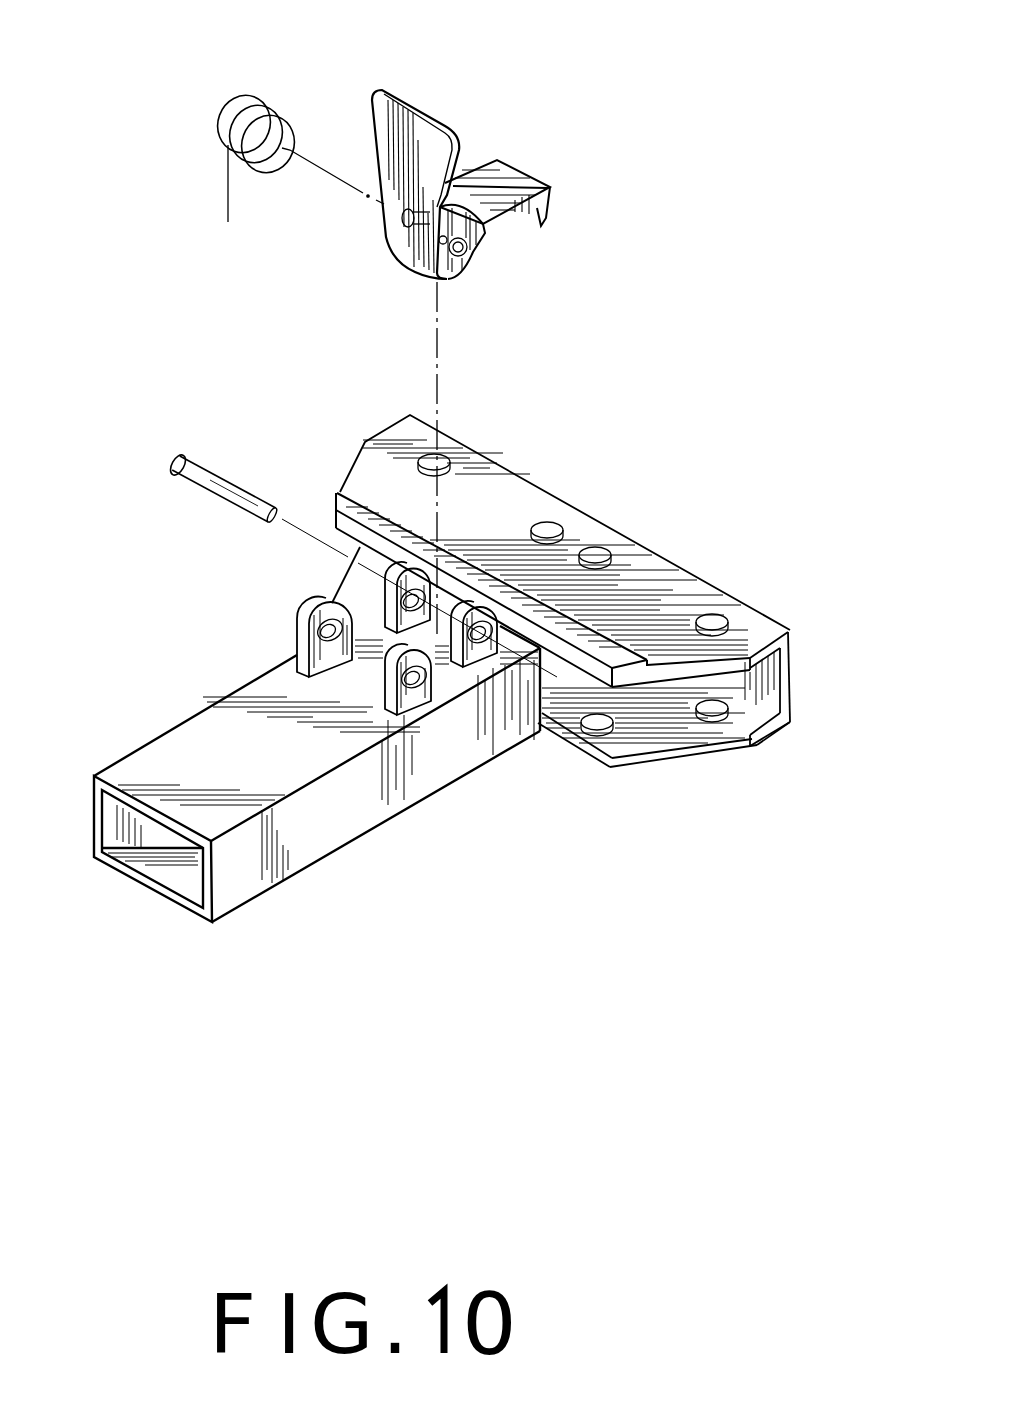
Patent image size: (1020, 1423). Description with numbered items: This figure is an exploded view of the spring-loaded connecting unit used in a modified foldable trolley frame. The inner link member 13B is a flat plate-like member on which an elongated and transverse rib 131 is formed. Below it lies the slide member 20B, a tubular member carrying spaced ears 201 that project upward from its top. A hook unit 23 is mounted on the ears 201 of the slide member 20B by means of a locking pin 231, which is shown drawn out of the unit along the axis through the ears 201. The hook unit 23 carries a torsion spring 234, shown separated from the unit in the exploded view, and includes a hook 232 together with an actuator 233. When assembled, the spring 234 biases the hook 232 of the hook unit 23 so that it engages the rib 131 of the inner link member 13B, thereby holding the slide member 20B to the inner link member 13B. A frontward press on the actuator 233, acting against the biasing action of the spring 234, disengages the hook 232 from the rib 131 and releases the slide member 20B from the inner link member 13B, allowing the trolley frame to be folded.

The torsion spring 234 is at (235, 110).
The actuator 233 is at (382, 88).
The hook unit 23 is at (497, 160).
The hook 232 is at (542, 203).
The locking pin 231 is at (211, 478).
The rib 131 is at (342, 488).
The inner link member 13B is at (587, 533).
The ears 201 is at (460, 653).
The slide member 20B is at (361, 845).